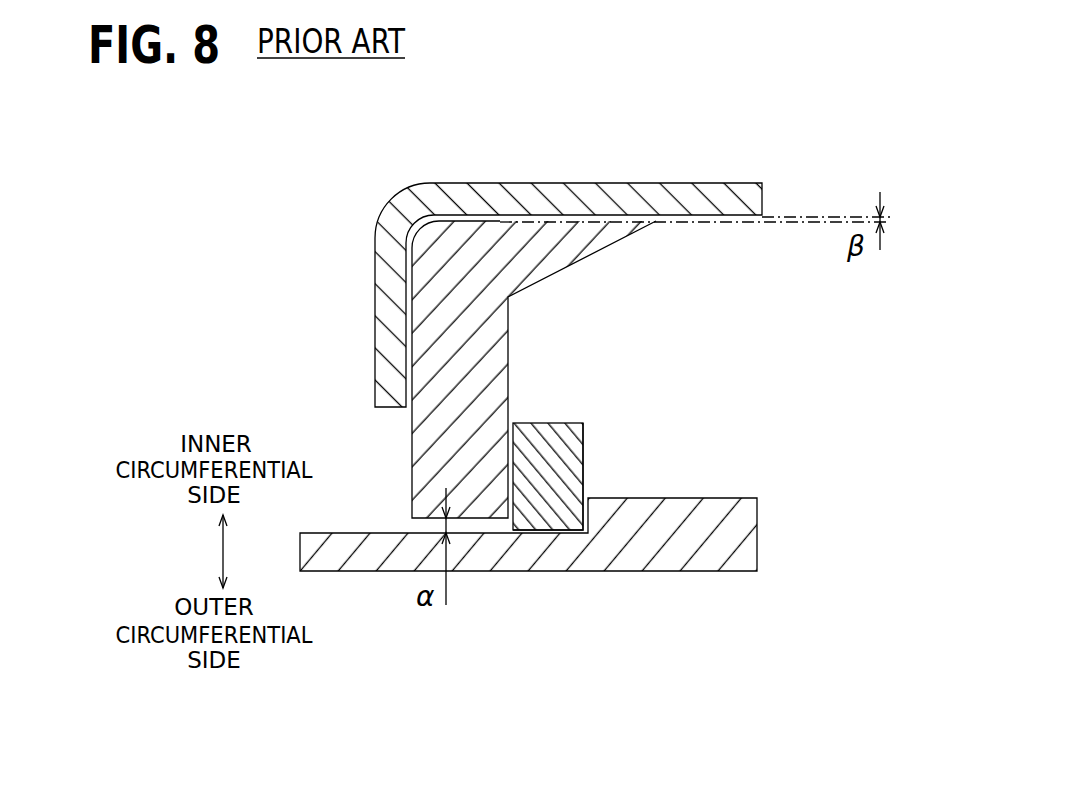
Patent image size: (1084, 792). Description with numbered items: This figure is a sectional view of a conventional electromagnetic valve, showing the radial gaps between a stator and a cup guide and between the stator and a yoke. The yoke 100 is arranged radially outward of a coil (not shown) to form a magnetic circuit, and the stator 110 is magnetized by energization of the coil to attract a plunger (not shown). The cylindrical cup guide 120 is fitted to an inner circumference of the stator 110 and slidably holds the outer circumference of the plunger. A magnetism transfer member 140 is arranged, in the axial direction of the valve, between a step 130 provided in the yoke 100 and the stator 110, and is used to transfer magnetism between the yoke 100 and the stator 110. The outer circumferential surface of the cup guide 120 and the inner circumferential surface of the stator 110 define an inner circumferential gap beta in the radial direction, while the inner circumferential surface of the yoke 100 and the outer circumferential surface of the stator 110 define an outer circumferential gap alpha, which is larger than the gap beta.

The yoke 100 is at (712, 565).
The stator 110 is at (430, 432).
The cylindrical cup guide 120 is at (543, 190).
The step 130 is at (582, 515).
The magnetism transfer member 140 is at (575, 455).